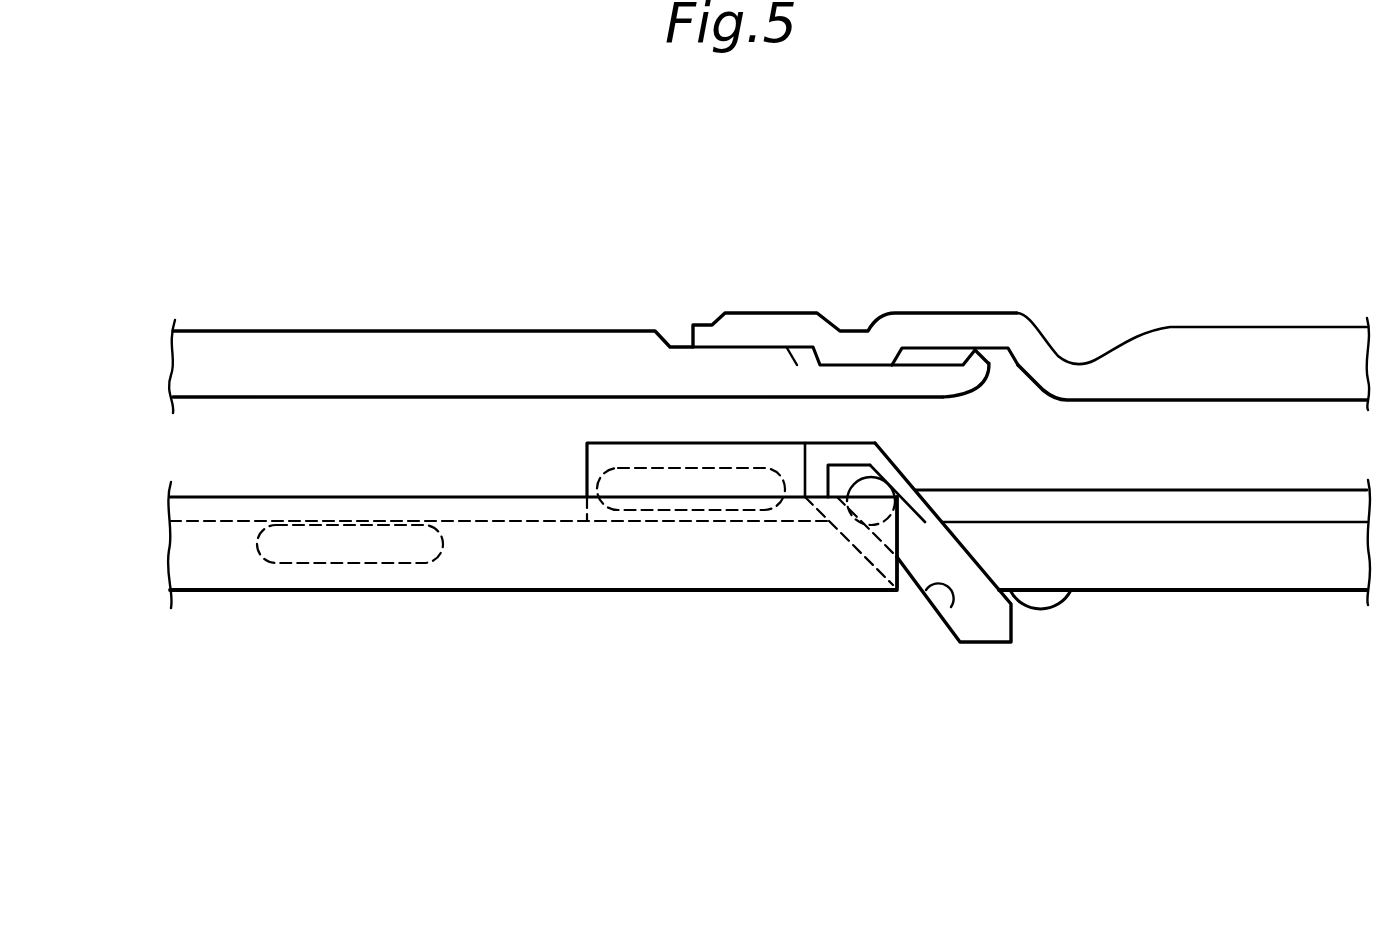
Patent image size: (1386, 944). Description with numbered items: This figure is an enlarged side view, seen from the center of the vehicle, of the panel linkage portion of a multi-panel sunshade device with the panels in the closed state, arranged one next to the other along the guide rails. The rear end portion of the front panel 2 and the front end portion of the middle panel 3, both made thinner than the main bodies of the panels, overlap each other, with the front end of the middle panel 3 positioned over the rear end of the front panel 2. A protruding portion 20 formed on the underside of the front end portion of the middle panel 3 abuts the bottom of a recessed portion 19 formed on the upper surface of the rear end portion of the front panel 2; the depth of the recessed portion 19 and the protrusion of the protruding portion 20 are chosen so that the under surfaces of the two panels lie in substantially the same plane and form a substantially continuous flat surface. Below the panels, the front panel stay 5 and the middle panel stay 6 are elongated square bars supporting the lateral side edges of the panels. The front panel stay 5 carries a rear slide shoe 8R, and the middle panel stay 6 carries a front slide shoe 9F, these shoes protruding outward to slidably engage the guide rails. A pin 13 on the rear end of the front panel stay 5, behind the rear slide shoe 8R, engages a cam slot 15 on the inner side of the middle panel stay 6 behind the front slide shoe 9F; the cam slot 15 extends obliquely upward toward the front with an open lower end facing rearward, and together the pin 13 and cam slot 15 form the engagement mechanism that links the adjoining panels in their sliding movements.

The front panel 2 is at (367, 345).
The middle panel 3 is at (1273, 340).
The recessed portion 19 is at (933, 365).
The protruding portion 20 is at (863, 357).
The front panel stay 5 is at (525, 572).
The middle panel stay 6 is at (1245, 570).
The rear slide shoe 8R is at (342, 565).
The front slide shoe 9F is at (678, 510).
The pin 13 is at (883, 523).
The cam slot 15 is at (951, 603).